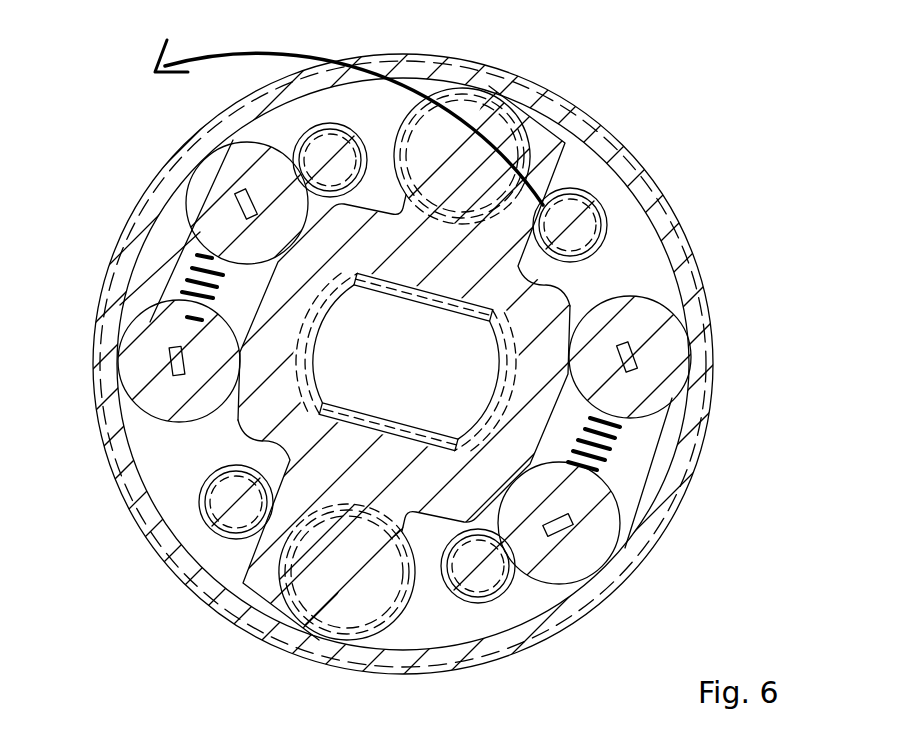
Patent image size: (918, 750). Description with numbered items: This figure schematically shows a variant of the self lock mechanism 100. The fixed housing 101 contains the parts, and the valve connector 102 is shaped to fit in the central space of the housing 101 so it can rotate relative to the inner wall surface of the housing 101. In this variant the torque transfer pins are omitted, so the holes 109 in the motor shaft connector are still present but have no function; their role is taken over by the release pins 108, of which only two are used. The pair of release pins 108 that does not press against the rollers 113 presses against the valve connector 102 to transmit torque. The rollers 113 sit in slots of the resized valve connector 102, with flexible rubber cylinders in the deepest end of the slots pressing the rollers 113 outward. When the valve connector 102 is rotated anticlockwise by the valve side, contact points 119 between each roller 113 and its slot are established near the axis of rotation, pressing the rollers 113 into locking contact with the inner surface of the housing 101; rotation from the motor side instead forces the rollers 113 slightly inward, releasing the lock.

The self lock mechanism 100 is at (662, 131).
The housing 101 is at (165, 577).
The valve connector 102 is at (337, 423).
The release pins 108 is at (320, 152).
The holes 109 is at (418, 133).
The rollers 113 is at (207, 200).
The contact points 119 is at (570, 347).